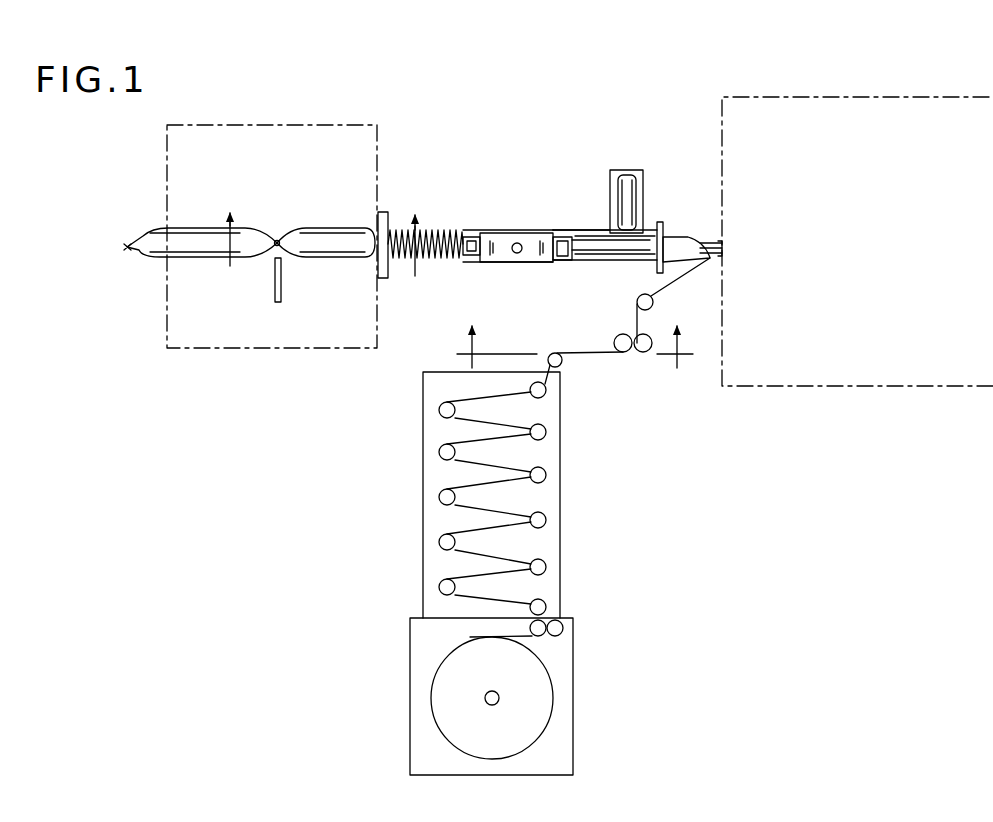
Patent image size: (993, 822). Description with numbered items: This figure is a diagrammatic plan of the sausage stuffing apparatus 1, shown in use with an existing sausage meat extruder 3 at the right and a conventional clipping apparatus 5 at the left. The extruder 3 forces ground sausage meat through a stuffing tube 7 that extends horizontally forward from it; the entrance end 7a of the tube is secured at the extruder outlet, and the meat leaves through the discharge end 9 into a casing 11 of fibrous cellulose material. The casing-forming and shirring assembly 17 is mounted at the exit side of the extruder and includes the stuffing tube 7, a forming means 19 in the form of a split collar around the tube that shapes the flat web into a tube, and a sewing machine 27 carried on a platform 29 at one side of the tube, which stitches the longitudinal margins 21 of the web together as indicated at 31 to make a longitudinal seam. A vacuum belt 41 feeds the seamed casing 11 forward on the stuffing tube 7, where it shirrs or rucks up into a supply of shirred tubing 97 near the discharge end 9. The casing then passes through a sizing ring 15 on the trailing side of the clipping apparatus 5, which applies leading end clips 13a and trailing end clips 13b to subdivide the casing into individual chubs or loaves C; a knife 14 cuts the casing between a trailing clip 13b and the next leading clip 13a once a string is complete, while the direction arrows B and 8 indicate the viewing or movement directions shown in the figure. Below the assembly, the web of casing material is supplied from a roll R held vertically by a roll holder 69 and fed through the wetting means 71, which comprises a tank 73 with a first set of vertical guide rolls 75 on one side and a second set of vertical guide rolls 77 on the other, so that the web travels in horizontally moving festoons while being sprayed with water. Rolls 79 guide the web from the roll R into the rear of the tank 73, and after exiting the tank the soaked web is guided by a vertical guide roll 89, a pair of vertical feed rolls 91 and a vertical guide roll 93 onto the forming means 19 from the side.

The sausage stuffing apparatus 1 is at (520, 200).
The sausage meat extruder 3 is at (878, 250).
The clipping apparatus 5 is at (165, 329).
The stuffing tube 7 is at (710, 237).
The entrance end of stuffing tube 7a is at (722, 250).
The direction of movement 8 is at (426, 252).
The discharge end of stuffing tube 9 is at (350, 262).
The sausage casing 11 is at (592, 258).
The leading end clips 13a is at (127, 246).
The trailing end clips 13b is at (276, 243).
The knife 14 is at (275, 285).
The sizing ring 15 is at (388, 280).
The casing-forming and shirring assembly 17 is at (519, 264).
The forming means 19 is at (666, 235).
The longitudinal margins of the web 21 is at (594, 229).
The sewing machine 27 is at (640, 190).
The platform 29 is at (625, 174).
The stitching 31 is at (562, 229).
The vacuum belt 41 is at (560, 262).
The roll holder 69 is at (505, 777).
The wetting means 71 is at (423, 518).
The tank 73 is at (562, 498).
The first set of vertical guide rolls 75 is at (546, 472).
The second set of vertical guide rolls 77 is at (440, 495).
The rolls 79 is at (565, 630).
The vertical guide roll 89 is at (562, 364).
The pair of vertical feed rolls 91 is at (616, 343).
The vertical guide roll 93 is at (654, 302).
The shirred tubing 97 is at (447, 264).
The section line B is at (217, 248).
The chub or loaf C is at (168, 260).
The supply roll R is at (553, 700).